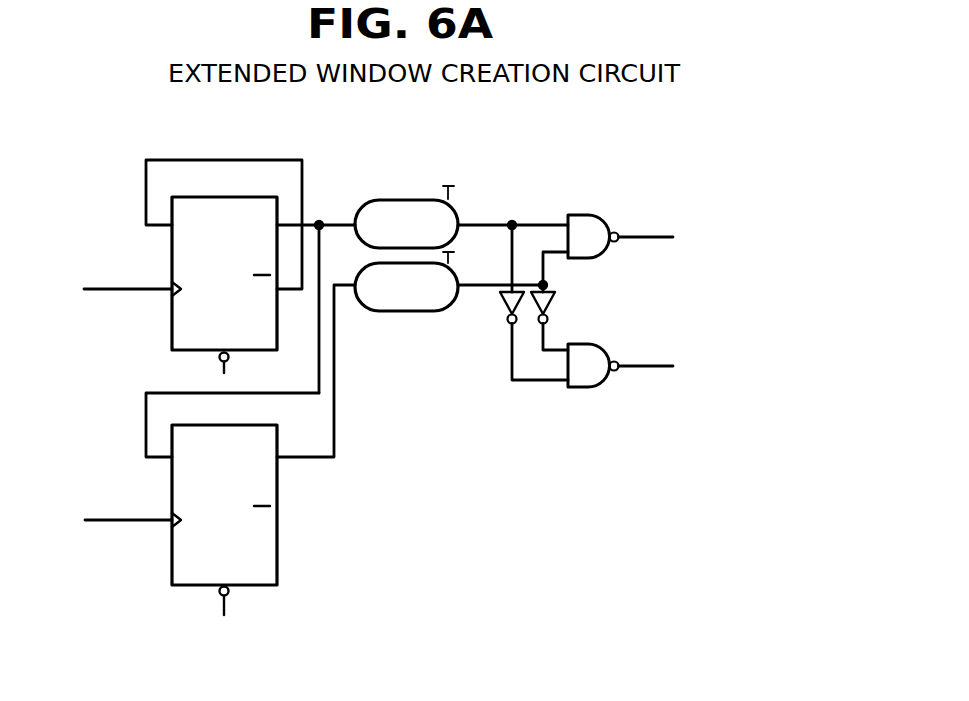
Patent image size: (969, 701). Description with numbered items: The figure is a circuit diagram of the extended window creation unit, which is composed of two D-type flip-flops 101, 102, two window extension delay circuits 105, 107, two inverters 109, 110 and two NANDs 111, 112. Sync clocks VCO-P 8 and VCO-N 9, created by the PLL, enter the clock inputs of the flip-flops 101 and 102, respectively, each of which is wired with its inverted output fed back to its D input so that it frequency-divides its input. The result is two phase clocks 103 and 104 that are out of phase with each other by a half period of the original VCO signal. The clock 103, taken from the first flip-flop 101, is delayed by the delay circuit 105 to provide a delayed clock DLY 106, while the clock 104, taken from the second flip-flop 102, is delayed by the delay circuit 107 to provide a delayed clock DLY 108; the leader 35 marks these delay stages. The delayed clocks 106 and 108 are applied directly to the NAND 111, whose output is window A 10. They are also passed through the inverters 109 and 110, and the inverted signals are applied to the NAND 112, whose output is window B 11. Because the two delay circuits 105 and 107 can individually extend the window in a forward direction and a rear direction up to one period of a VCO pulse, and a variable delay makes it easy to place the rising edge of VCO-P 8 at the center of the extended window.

The VCO-P sync clock 8 is at (43, 258).
The VCO-N sync clock 9 is at (40, 490).
The window A 10 is at (705, 220).
The window B 11 is at (712, 352).
The delay line 35 is at (449, 188).
The D-type flip-flop 101 is at (252, 197).
The D-type flip-flop 102 is at (253, 425).
The phase clock 103 is at (320, 221).
The phase clock 104 is at (327, 460).
The window extension delay circuit 105 is at (410, 200).
The delayed clock (DLY) 106 is at (483, 196).
The window extension delay circuit 107 is at (397, 311).
The delayed clock (DLY) 108 is at (478, 288).
The inverter 109 is at (506, 305).
The inverter 110 is at (554, 300).
The NAND 111 is at (580, 215).
The NAND 112 is at (580, 344).